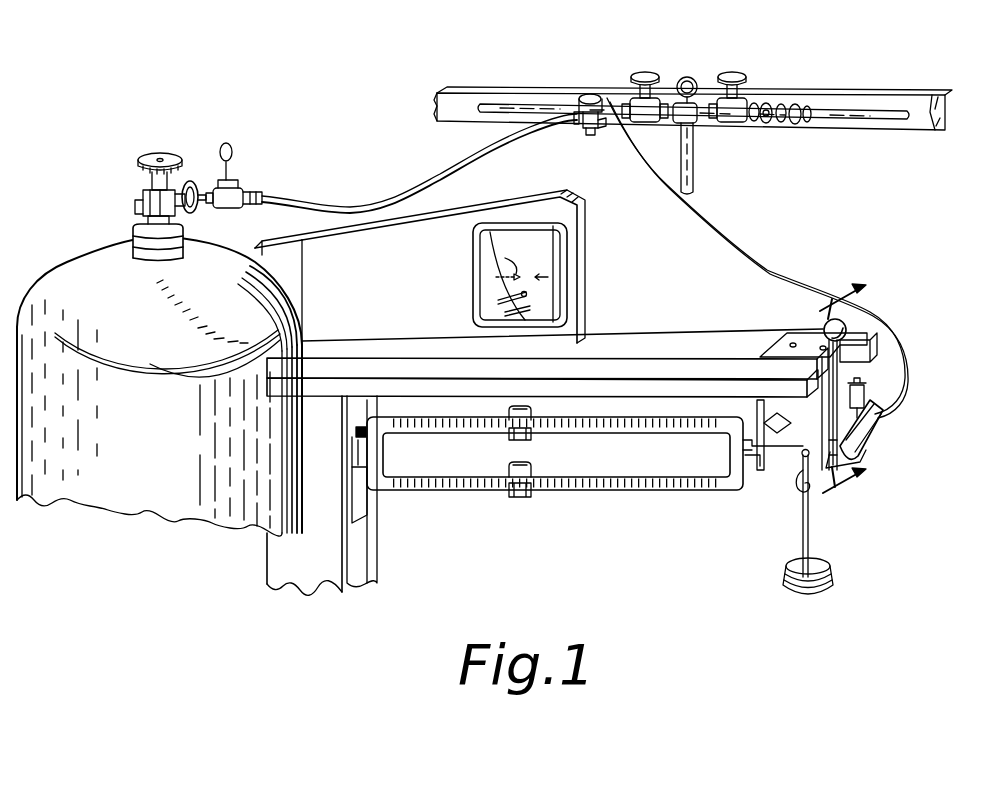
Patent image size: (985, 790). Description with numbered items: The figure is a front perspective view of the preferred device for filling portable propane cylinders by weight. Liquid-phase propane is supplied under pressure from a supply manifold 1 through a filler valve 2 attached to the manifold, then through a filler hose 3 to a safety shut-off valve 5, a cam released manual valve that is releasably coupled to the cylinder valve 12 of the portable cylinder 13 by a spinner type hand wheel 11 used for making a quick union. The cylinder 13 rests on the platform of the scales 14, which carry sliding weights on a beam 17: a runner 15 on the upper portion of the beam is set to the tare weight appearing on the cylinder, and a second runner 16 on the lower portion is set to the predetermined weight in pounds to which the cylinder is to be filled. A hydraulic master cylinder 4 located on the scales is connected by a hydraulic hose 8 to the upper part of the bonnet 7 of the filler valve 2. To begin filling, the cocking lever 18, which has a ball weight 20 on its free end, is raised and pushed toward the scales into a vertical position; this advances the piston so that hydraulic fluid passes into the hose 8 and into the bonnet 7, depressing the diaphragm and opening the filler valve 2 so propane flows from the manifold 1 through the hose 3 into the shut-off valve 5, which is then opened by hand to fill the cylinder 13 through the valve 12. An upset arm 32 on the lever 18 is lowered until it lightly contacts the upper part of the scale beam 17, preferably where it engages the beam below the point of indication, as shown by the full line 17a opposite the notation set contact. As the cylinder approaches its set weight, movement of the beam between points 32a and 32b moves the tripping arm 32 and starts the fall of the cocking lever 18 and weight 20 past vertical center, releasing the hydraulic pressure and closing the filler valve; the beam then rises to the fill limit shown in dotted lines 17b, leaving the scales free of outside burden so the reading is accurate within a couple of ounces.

The supply manifold 1 is at (862, 108).
The filler valve 2 is at (597, 128).
The filler hose 3 is at (371, 206).
The hydraulic master cylinder 4 is at (880, 406).
The safety shut-off valve 5 is at (233, 184).
The bonnet 7 is at (590, 97).
The hydraulic hose 8 is at (718, 229).
The spinner type hand wheel 11 is at (196, 182).
The cylinder valve 12 is at (141, 197).
The portable cylinder 13 is at (86, 263).
The scales 14 is at (638, 340).
The runner 15 is at (530, 433).
The second runner 16 is at (518, 493).
The beam 17 is at (607, 488).
The full line 17a is at (523, 294).
The dotted lines 17b is at (507, 263).
The cocking lever 18 is at (862, 368).
The ball weight 20 is at (845, 328).
The upset arm 32 is at (790, 448).
The point 32a is at (513, 279).
The point 32b is at (517, 311).